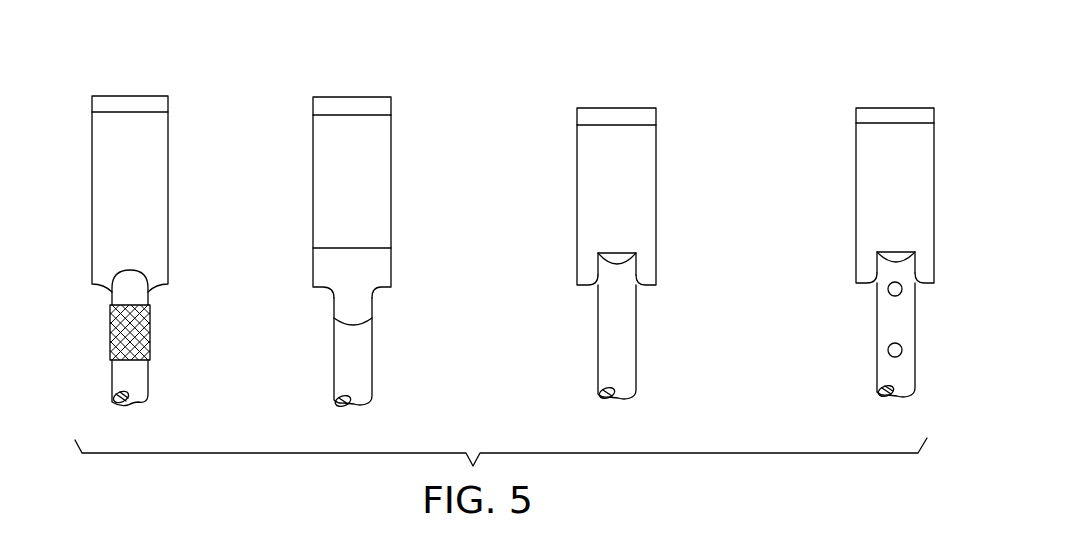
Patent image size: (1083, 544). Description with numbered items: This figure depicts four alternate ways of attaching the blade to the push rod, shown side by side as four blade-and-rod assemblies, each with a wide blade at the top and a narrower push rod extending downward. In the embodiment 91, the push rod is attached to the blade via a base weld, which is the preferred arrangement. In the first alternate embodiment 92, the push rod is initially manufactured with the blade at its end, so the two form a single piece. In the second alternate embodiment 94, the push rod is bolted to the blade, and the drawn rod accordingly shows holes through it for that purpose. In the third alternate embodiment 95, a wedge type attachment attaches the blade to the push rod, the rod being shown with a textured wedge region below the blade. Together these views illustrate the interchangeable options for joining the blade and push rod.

The third alternate embodiment 95 is at (138, 72).
The first alternate embodiment 92 is at (357, 83).
The embodiment 91 is at (620, 93).
The second alternate embodiment 94 is at (900, 90).